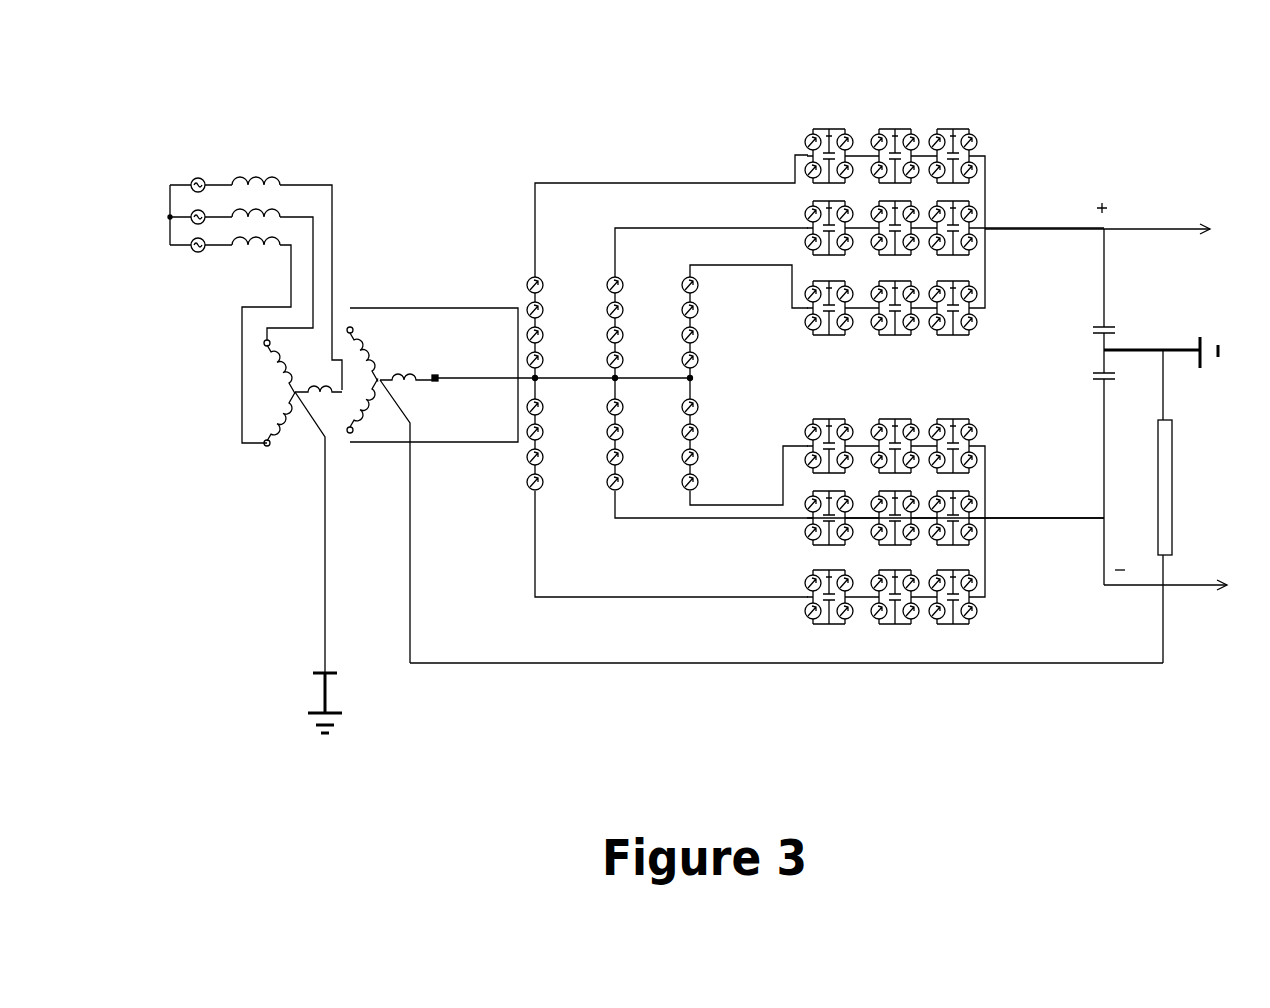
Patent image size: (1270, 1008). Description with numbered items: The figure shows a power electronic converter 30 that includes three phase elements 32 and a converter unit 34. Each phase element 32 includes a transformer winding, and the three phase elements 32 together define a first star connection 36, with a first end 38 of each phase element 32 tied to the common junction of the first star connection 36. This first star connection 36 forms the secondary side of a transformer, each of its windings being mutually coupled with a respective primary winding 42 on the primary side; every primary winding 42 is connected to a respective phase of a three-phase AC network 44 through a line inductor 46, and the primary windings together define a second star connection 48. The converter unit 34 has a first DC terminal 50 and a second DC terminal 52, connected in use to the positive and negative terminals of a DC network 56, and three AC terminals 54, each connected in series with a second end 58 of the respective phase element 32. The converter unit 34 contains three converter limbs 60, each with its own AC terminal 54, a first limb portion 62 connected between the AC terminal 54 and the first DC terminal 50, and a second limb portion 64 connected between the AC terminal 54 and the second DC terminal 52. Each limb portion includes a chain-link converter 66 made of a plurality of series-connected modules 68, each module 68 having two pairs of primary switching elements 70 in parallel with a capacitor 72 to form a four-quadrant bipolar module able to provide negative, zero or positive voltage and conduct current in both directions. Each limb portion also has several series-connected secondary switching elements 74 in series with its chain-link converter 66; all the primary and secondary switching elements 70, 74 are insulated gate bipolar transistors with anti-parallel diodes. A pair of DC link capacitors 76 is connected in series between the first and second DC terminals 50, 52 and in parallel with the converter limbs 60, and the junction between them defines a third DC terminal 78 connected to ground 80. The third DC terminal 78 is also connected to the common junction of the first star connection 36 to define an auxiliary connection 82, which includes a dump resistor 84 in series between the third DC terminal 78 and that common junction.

The power electronic converter 30 is at (472, 157).
The phase element 32 is at (408, 387).
The converter unit 34 is at (655, 90).
The first star connection 36 is at (426, 422).
The first end 38 is at (392, 355).
The primary winding 42 is at (293, 411).
The three-phase AC network 44 is at (188, 167).
The line inductor 46 is at (264, 180).
The second star connection 48 is at (289, 506).
The first DC terminal 50 is at (1110, 222).
The second DC terminal 52 is at (1098, 523).
The AC terminal 54 is at (698, 378).
The DC network 56 is at (1252, 410).
The second end 58 is at (349, 325).
The converter limb 60 is at (951, 349).
The first limb portion 62 is at (708, 252).
The second limb portion 64 is at (727, 512).
The chain-link converter 66 is at (805, 268).
The module 68 is at (955, 412).
The primary switching element 70 is at (882, 349).
The capacitor 72 is at (828, 128).
The secondary switching element 74 is at (545, 288).
The DC link capacitor 76 is at (1092, 377).
The third DC terminal 78 is at (1107, 345).
The ground 80 is at (1210, 365).
The auxiliary connection 82 is at (808, 672).
The dump resistor 84 is at (1170, 475).